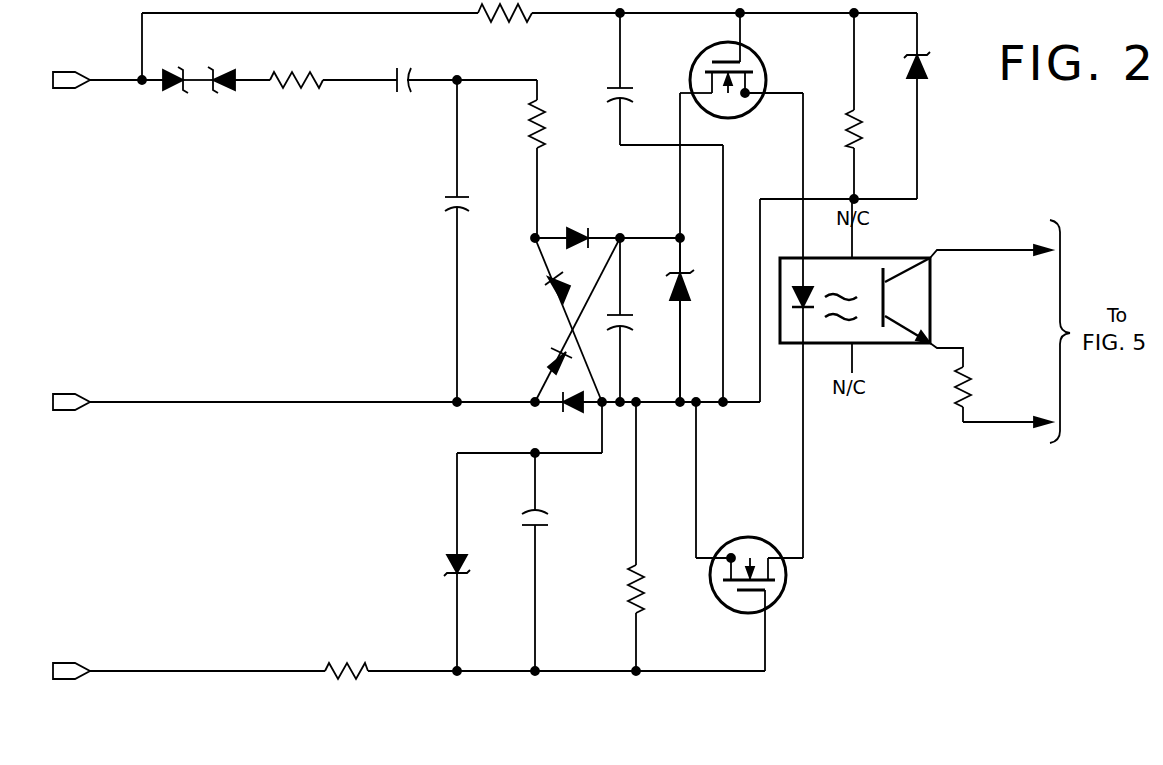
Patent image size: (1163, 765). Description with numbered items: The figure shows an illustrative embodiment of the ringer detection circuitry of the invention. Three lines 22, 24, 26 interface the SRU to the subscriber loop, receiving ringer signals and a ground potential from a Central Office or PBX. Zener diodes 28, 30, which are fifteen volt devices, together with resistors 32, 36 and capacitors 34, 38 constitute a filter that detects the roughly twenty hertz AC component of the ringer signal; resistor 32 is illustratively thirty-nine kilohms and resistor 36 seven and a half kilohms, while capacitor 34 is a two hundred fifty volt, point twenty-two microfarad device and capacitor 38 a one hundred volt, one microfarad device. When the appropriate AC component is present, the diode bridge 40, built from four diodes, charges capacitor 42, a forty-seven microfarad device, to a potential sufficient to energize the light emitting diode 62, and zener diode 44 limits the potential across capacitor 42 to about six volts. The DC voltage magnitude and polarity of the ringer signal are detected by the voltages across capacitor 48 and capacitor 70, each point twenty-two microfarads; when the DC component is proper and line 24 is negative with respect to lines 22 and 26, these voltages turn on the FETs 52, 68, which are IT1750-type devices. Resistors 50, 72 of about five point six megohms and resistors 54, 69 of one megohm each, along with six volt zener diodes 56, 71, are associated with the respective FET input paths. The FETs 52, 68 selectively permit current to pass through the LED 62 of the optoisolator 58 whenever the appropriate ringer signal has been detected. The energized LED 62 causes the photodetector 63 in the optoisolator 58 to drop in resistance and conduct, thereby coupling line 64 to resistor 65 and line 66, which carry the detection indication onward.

The line 22 is at (105, 82).
The line 24 is at (118, 404).
The line 26 is at (113, 671).
The zener diode 28 is at (179, 68).
The zener diode 30 is at (226, 68).
The resistor 32 is at (326, 84).
The capacitor 34 is at (400, 94).
The resistor 36 is at (548, 143).
The capacitor 38 is at (468, 200).
The diode bridge 40 is at (602, 256).
The capacitor 42 is at (636, 325).
The zener diode 44 is at (690, 292).
The capacitor 48 is at (636, 98).
The resistor 50 is at (505, 18).
The FET 52 is at (766, 70).
The resistor 54 is at (862, 130).
The zener diode 56 is at (930, 60).
The optoisolator 58 is at (885, 286).
The light emitting diode 62 is at (810, 290).
The photodetector 63 is at (886, 310).
The line 64 is at (1024, 248).
The resistor 65 is at (973, 385).
The line 66 is at (1020, 424).
The FET 68 is at (787, 575).
The resistor 69 is at (646, 572).
The capacitor 70 is at (550, 517).
The zener diode 71 is at (446, 566).
The resistor 72 is at (335, 665).